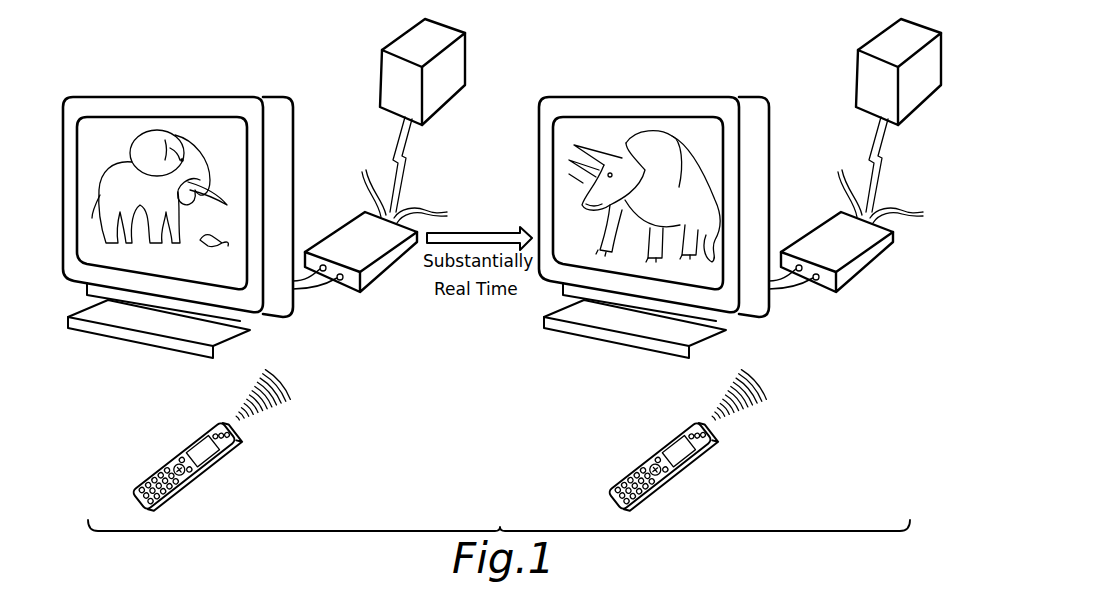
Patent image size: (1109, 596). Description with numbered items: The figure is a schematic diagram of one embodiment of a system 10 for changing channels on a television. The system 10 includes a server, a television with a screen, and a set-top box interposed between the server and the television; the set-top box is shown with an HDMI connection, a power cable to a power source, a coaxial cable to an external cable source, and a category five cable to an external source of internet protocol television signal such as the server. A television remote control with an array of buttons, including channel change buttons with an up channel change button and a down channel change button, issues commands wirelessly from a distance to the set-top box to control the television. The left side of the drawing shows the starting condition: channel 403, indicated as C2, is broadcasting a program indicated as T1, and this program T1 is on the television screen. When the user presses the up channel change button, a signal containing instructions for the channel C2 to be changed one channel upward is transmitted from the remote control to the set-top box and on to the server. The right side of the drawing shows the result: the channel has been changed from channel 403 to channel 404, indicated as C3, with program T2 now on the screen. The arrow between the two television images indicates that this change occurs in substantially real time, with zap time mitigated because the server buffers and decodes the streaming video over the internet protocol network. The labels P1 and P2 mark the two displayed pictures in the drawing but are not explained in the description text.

The system for changing channels 10 is at (512, 410).
The program displayed at first time P1 is at (117, 133).
The program displayed at second time P2 is at (634, 138).
The channel C2 is at (92, 254).
The channel C3 is at (555, 310).
The program T1 is at (238, 273).
The program T2 is at (706, 330).
The channel 403 is at (107, 251).
The channel 404 is at (583, 251).